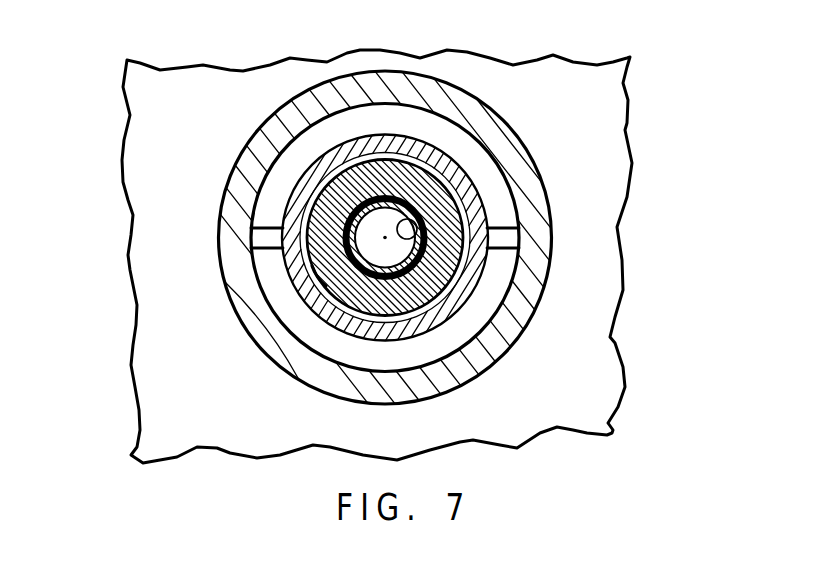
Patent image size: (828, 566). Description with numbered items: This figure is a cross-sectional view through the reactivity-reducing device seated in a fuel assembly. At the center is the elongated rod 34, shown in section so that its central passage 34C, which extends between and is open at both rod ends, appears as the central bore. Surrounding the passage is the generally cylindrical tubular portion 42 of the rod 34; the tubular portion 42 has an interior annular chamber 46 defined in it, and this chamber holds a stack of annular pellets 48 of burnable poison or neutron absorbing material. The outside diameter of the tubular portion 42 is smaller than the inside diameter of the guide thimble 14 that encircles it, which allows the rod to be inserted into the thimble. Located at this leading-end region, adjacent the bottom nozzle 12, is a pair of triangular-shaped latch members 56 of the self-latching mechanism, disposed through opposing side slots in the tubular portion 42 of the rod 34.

The bottom nozzle 12 is at (495, 69).
The guide thimble 14 is at (265, 336).
The elongated rod 34 is at (478, 284).
The central passage 34C is at (412, 218).
The tubular portion 42 is at (348, 143).
The interior annular chamber 46 is at (320, 272).
The annular pellets 48 is at (333, 213).
The latch members 56 is at (262, 234).